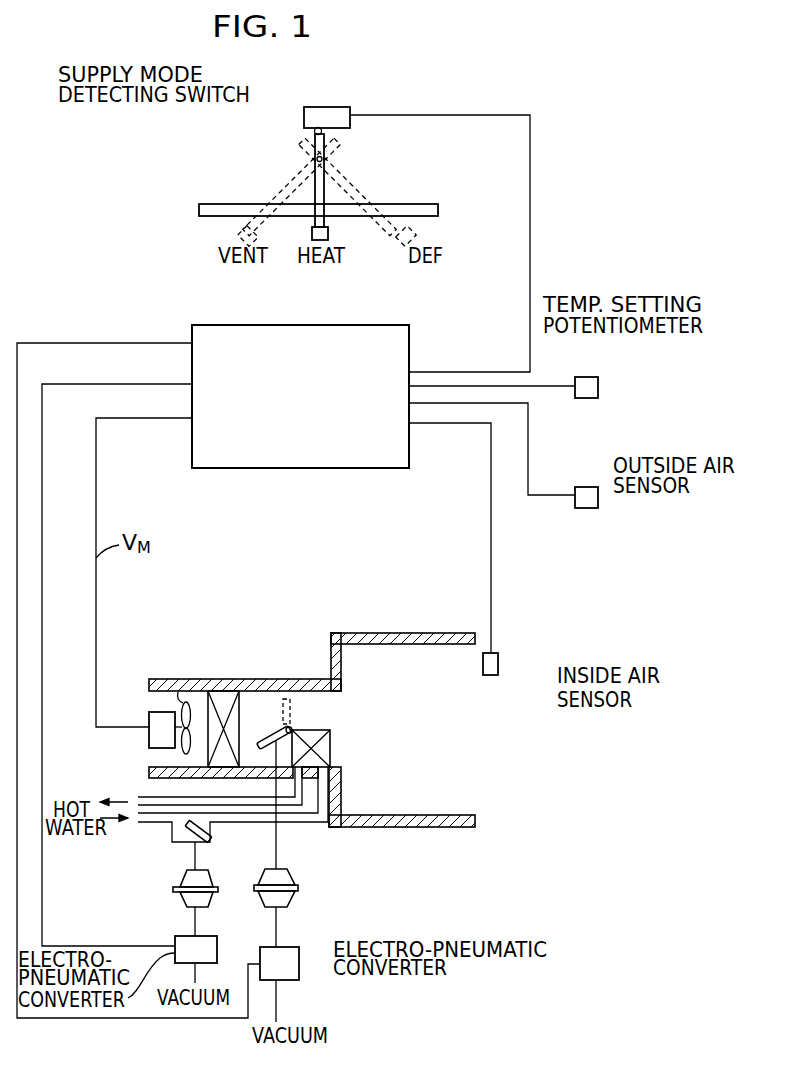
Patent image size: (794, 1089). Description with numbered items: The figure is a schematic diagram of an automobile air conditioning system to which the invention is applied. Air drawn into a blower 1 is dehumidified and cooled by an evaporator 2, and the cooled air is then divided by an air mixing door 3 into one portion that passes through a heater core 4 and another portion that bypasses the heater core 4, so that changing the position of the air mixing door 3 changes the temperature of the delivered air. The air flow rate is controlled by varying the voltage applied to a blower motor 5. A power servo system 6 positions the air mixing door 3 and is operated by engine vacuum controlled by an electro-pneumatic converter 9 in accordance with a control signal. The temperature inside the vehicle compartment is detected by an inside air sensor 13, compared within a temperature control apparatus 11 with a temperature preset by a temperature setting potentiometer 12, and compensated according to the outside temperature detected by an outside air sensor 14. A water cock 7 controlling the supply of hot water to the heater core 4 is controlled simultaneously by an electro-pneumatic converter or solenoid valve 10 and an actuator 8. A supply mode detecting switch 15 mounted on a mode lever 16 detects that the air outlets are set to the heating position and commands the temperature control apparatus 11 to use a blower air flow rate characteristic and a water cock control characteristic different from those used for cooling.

The blower 1 is at (192, 679).
The evaporator 2 is at (242, 701).
The air mixing door 3 is at (272, 738).
The heater core 4 is at (331, 745).
The blower motor 5 is at (162, 712).
The power servo system 6 is at (296, 877).
The water cock 7 is at (212, 829).
The actuator 8 is at (180, 878).
The electro-pneumatic converter 9 is at (299, 958).
The electro-pneumatic converter or solenoid valve 10 is at (175, 937).
The temperature control apparatus 11 is at (227, 325).
The temperature setting potentiometer 12 is at (580, 377).
The inside air sensor 13 is at (498, 665).
The outside air sensor 14 is at (580, 487).
The supply mode detecting switch 15 is at (313, 107).
The mode lever 16 is at (330, 234).